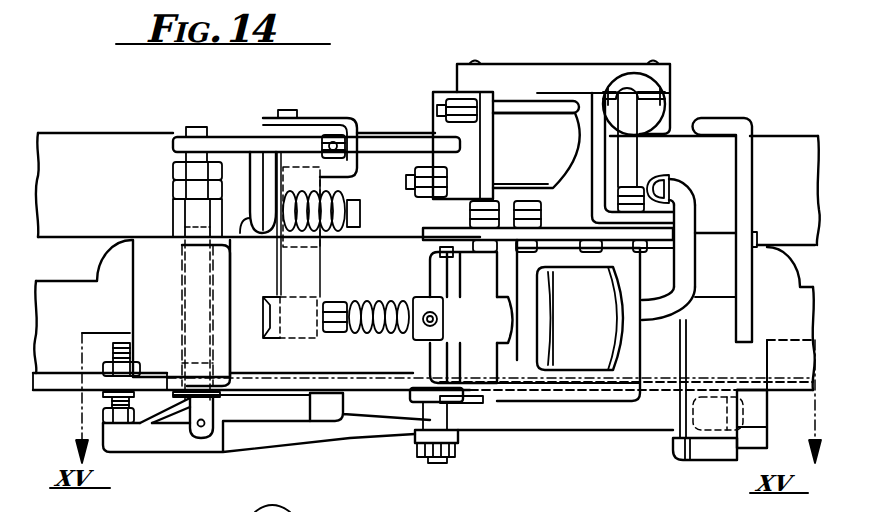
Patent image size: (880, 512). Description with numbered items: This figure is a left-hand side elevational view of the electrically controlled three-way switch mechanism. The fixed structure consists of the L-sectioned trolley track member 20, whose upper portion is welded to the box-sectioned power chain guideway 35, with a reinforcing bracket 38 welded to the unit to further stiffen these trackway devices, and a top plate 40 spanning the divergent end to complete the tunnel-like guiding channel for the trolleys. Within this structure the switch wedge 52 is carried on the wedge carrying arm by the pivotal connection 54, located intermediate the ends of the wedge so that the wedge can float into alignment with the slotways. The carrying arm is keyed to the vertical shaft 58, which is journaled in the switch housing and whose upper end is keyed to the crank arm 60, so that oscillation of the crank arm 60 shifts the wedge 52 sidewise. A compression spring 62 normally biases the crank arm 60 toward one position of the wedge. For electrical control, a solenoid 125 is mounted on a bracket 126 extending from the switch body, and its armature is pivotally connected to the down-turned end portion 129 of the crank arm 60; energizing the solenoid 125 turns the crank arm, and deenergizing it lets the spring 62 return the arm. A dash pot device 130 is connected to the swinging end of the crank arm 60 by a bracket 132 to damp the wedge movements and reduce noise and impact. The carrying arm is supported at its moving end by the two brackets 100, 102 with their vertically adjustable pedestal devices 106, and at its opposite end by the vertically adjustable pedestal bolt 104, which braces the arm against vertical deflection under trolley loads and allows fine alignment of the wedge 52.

The trolley track member 20 is at (58, 286).
The power chain guideway 35 is at (66, 140).
The reinforcing bracket 38 is at (726, 121).
The top plate 40 is at (153, 237).
The wedge 52 is at (398, 375).
The pivotal connection 54 is at (431, 458).
The vertical shaft 58 is at (192, 127).
The crank arm 60 is at (226, 146).
The compression spring 62 is at (327, 199).
The bracket 100 is at (757, 414).
The bracket 102 is at (678, 447).
The pedestal bolt 104 is at (122, 345).
The pedestal device 106 is at (705, 449).
The solenoid 125 is at (404, 298).
The bracket 126 is at (441, 230).
The down-turned end portion 129 is at (298, 268).
The dash pot device 130 is at (508, 100).
The bracket 132 is at (325, 127).